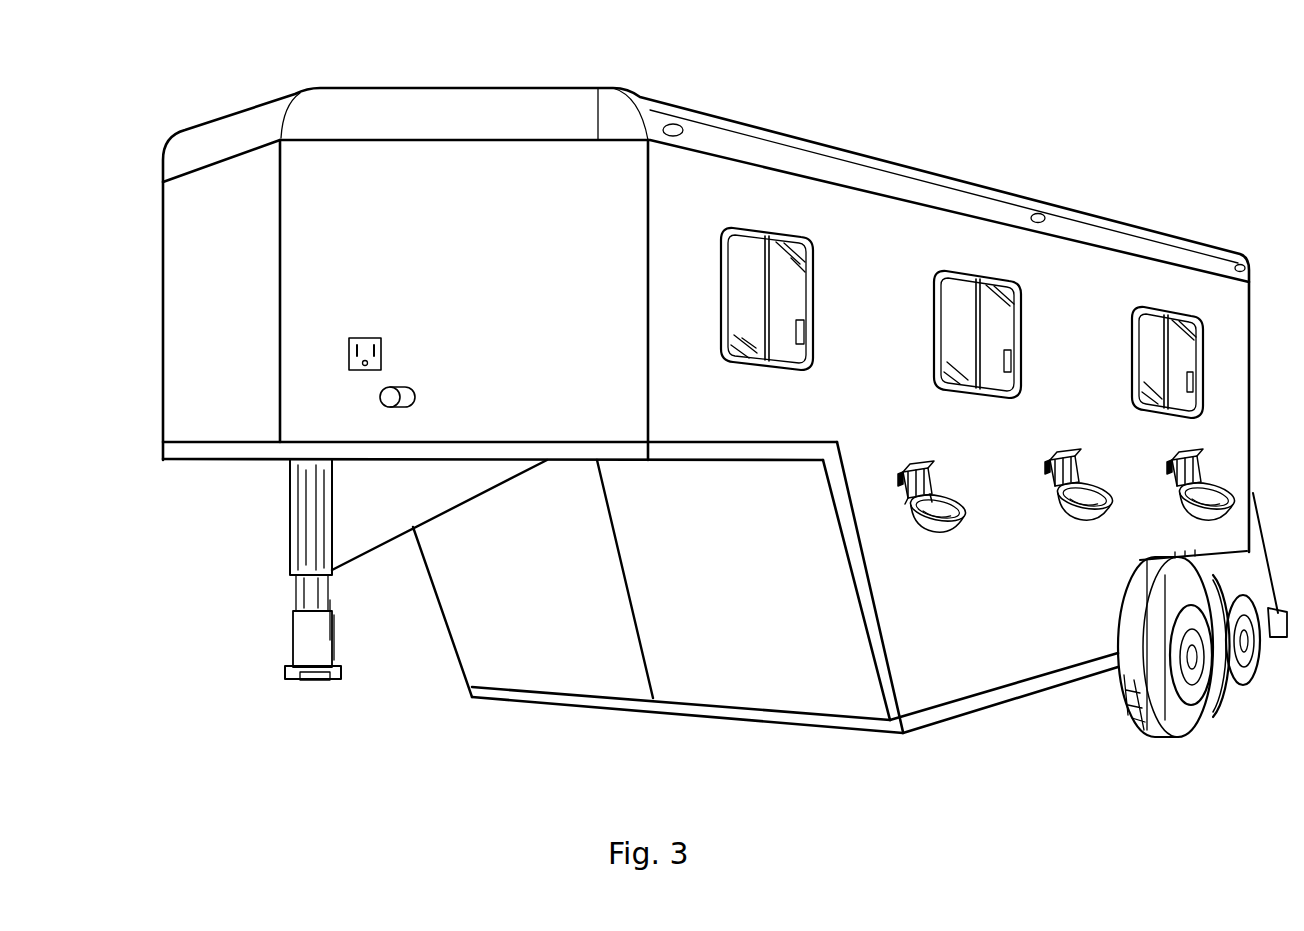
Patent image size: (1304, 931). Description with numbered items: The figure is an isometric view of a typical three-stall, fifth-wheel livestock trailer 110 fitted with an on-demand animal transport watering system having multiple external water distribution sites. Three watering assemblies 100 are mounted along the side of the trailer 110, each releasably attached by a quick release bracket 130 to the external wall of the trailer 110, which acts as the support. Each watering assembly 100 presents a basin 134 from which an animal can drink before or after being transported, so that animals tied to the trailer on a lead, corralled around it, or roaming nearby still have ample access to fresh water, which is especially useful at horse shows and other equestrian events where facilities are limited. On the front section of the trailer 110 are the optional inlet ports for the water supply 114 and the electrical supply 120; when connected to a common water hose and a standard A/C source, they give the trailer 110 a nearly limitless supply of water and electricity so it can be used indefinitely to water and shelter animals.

The livestock trailer 110 is at (760, 103).
The electrical supply inlet port 120 is at (363, 336).
The water supply inlet port 114 is at (395, 383).
The watering assembly 100 is at (935, 528).
The quick release bracket 130 is at (925, 466).
The basin 134 is at (948, 494).